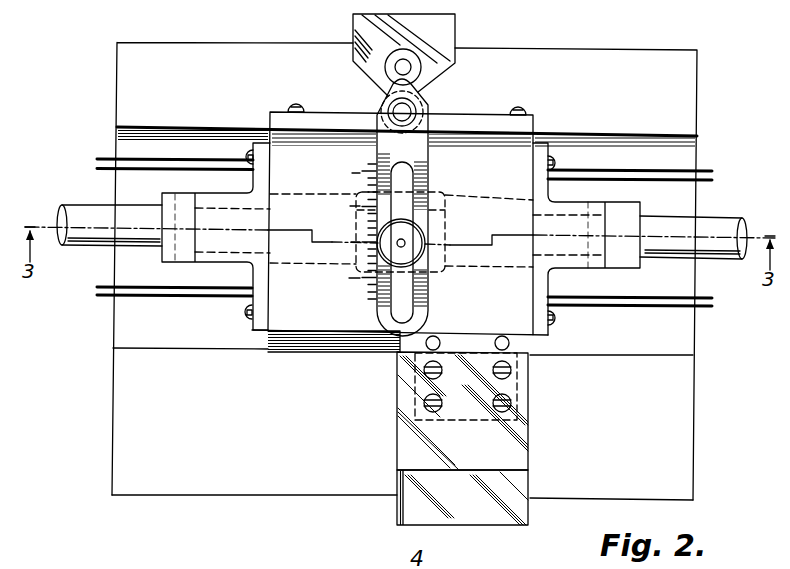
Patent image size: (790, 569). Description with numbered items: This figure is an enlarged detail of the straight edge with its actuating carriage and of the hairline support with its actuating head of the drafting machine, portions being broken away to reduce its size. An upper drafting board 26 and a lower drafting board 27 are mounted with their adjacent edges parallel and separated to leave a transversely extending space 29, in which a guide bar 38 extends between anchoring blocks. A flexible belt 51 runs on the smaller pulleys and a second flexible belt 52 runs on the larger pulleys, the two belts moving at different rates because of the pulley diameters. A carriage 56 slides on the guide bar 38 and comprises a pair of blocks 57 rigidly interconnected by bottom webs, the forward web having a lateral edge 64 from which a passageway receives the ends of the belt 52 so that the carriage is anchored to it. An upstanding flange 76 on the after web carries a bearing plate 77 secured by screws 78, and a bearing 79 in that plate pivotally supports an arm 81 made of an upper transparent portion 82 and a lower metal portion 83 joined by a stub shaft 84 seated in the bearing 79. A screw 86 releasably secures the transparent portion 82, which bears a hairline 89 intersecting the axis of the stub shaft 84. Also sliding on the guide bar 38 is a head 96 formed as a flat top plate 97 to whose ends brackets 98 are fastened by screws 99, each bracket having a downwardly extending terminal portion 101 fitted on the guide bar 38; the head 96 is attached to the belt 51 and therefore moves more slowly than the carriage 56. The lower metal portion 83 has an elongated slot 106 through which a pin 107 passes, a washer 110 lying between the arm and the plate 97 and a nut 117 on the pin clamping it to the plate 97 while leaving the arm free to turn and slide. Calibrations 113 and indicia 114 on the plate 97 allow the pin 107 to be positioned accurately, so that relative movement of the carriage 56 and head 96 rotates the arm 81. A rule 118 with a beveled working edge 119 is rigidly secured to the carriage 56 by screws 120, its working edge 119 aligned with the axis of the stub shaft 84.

The upper drafting board 26 is at (130, 76).
The lower drafting board 27 is at (112, 445).
The space 29 is at (120, 348).
The guide bar 38 is at (76, 206).
The belt 51 is at (97, 168).
The second flexible belt 52 is at (110, 158).
The carriage 56 is at (334, 346).
The blocks 57 is at (306, 258).
The lateral edge 64 is at (266, 338).
The upstanding flange 76 is at (540, 137).
The bearing plate 77 is at (538, 116).
The screws 78 is at (300, 92).
The bearing 79 is at (422, 101).
The arm 81 is at (403, 55).
The upper transparent portion 82 is at (353, 30).
The lower metal portion 83 is at (425, 178).
The stub shaft 84 is at (397, 112).
The screw 86 is at (386, 70).
The hairline 89 is at (404, 31).
The head 96 is at (306, 316).
The flat top plate 97 is at (517, 170).
The bracket 98 is at (213, 186).
The screws 99 is at (250, 155).
The downwardly extending terminal portion 101 is at (166, 255).
The slot 106 is at (408, 296).
The pin 107 is at (425, 238).
The washer 110 is at (406, 243).
The calibrations 113 is at (376, 171).
The indicia 114 is at (335, 205).
The nut 117 is at (407, 230).
The rule 118 is at (520, 508).
The beveled working edge 119 is at (397, 513).
The screws 120 is at (505, 401).